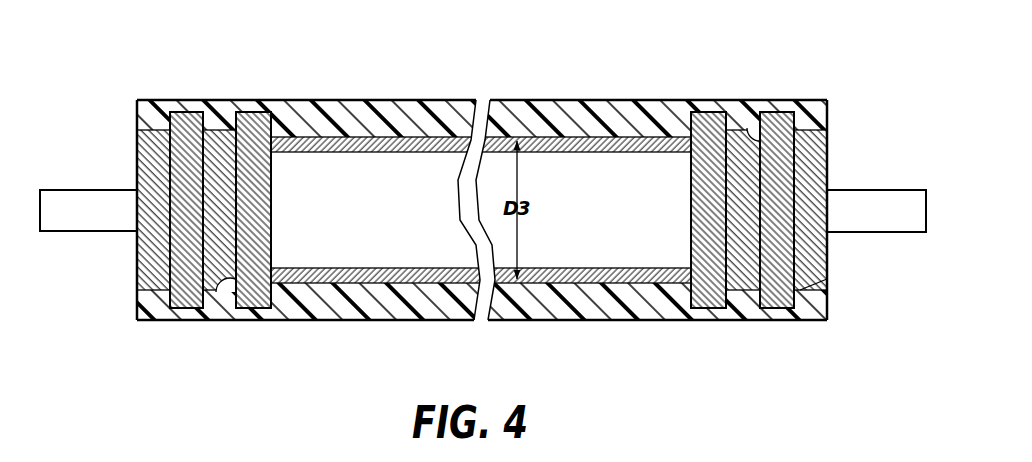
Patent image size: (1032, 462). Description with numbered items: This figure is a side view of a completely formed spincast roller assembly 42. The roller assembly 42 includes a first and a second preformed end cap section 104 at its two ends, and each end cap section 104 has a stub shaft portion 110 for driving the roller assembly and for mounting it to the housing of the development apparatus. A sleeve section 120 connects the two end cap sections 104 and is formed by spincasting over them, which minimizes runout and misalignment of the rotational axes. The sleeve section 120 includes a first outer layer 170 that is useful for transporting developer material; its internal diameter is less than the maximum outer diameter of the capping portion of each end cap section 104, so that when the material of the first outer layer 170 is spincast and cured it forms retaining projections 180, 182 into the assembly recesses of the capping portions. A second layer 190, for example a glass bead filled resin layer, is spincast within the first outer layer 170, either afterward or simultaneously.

The roller assembly 42 is at (294, 89).
The preformed end cap section 104 is at (276, 197).
The stub shaft portion 110 is at (91, 219).
The sleeve section 120 is at (580, 89).
The first outer layer 170 is at (402, 101).
The retaining projection 180 is at (771, 128).
The retaining projection 182 is at (140, 135).
The second layer 190 is at (424, 152).